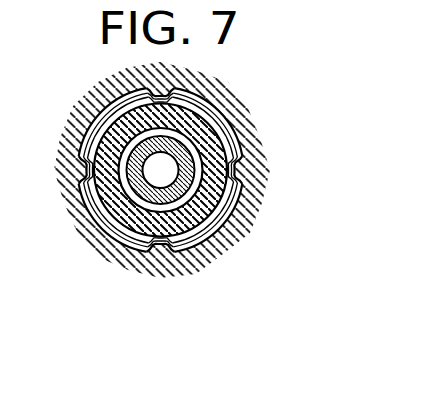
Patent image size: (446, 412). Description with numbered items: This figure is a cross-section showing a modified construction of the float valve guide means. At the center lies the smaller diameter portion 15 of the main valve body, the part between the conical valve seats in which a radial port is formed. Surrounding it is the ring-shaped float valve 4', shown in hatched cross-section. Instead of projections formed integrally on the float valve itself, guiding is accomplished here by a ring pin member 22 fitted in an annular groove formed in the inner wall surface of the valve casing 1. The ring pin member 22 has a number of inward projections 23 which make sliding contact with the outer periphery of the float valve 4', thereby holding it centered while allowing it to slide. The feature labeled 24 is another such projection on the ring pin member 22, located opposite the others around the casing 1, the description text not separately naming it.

The valve casing 1 is at (83, 102).
The float valve 4' is at (187, 159).
The smaller diameter portion 15 is at (65, 230).
The ring pin member 22 is at (240, 228).
The inward projections 23 is at (270, 167).
The projection 24 is at (68, 163).